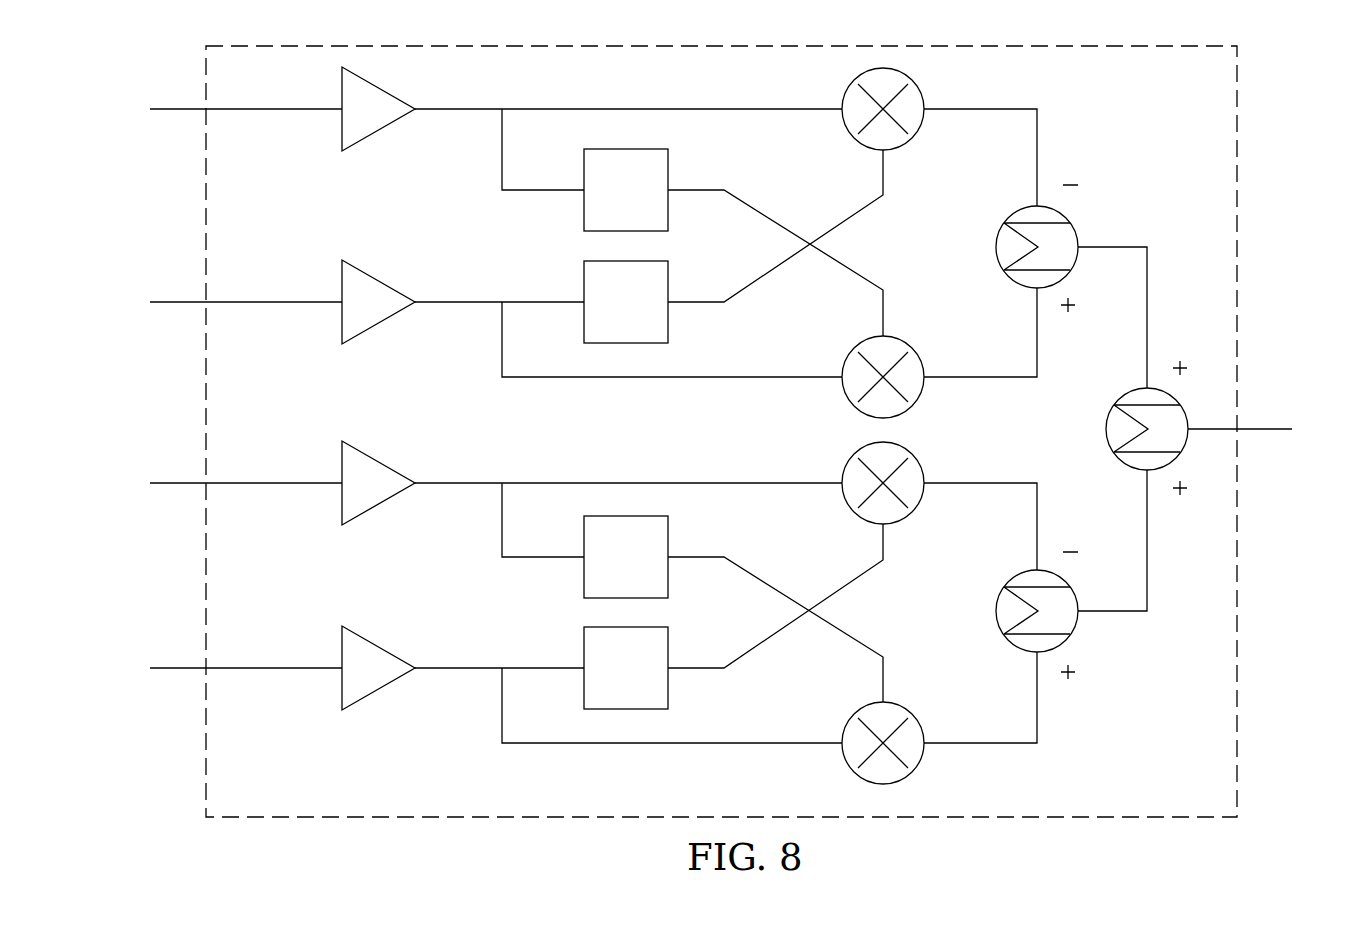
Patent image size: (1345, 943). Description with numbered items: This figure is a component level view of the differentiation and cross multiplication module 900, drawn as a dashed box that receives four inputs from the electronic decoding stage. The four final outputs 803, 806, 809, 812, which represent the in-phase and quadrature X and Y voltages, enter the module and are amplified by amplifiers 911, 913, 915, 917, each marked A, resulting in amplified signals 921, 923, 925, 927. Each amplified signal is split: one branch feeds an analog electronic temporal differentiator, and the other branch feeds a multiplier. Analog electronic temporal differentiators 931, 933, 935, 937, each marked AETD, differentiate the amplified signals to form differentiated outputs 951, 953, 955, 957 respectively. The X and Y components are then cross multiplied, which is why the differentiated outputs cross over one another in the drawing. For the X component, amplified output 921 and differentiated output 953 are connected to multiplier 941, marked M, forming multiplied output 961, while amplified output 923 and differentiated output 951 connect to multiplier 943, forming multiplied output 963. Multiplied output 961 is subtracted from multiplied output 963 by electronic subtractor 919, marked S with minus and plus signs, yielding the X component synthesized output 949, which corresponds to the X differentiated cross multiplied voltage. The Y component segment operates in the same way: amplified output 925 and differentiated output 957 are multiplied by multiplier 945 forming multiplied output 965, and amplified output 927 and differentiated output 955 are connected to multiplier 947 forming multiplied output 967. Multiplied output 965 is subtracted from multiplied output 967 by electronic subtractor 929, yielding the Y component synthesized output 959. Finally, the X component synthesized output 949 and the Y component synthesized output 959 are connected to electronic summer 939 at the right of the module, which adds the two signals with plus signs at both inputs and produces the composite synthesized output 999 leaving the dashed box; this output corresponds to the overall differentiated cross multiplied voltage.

The final output 803 is at (206, 109).
The final output 806 is at (206, 302).
The final output 809 is at (206, 483).
The final output 812 is at (206, 668).
The differentiation and cross multiplication module 900 is at (206, 780).
The amplifier 911 is at (340, 95).
The amplifier 913 is at (340, 288).
The amplifier 915 is at (340, 469).
The amplifier 917 is at (340, 654).
The electronic subtractor 919 is at (997, 238).
The amplified signal 921 is at (667, 109).
The amplified signal 923 is at (473, 304).
The amplified signal 925 is at (473, 481).
The amplified signal 927 is at (472, 670).
The electronic subtractor 929 is at (995, 610).
The analog electronic temporal differentiator 931 is at (582, 222).
The analog electronic temporal differentiator 933 is at (583, 292).
The analog electronic temporal differentiator 935 is at (583, 572).
The analog electronic temporal differentiator 937 is at (583, 650).
The electronic summer 939 is at (1106, 429).
The multiplier 941 is at (843, 92).
The multiplier 943 is at (913, 408).
The multiplier 945 is at (846, 468).
The multiplier 947 is at (850, 765).
The X component synthesized output 949 is at (1148, 362).
The differentiated output 951 is at (707, 190).
The differentiated output 953 is at (698, 304).
The differentiated output 955 is at (702, 555).
The differentiated output 957 is at (698, 670).
The Y component synthesized output 959 is at (1145, 563).
The multiplied output 961 is at (1020, 109).
The multiplied output 963 is at (1008, 377).
The multiplied output 965 is at (1033, 545).
The multiplied output 967 is at (1028, 743).
The composite synthesized output 999 is at (1250, 429).